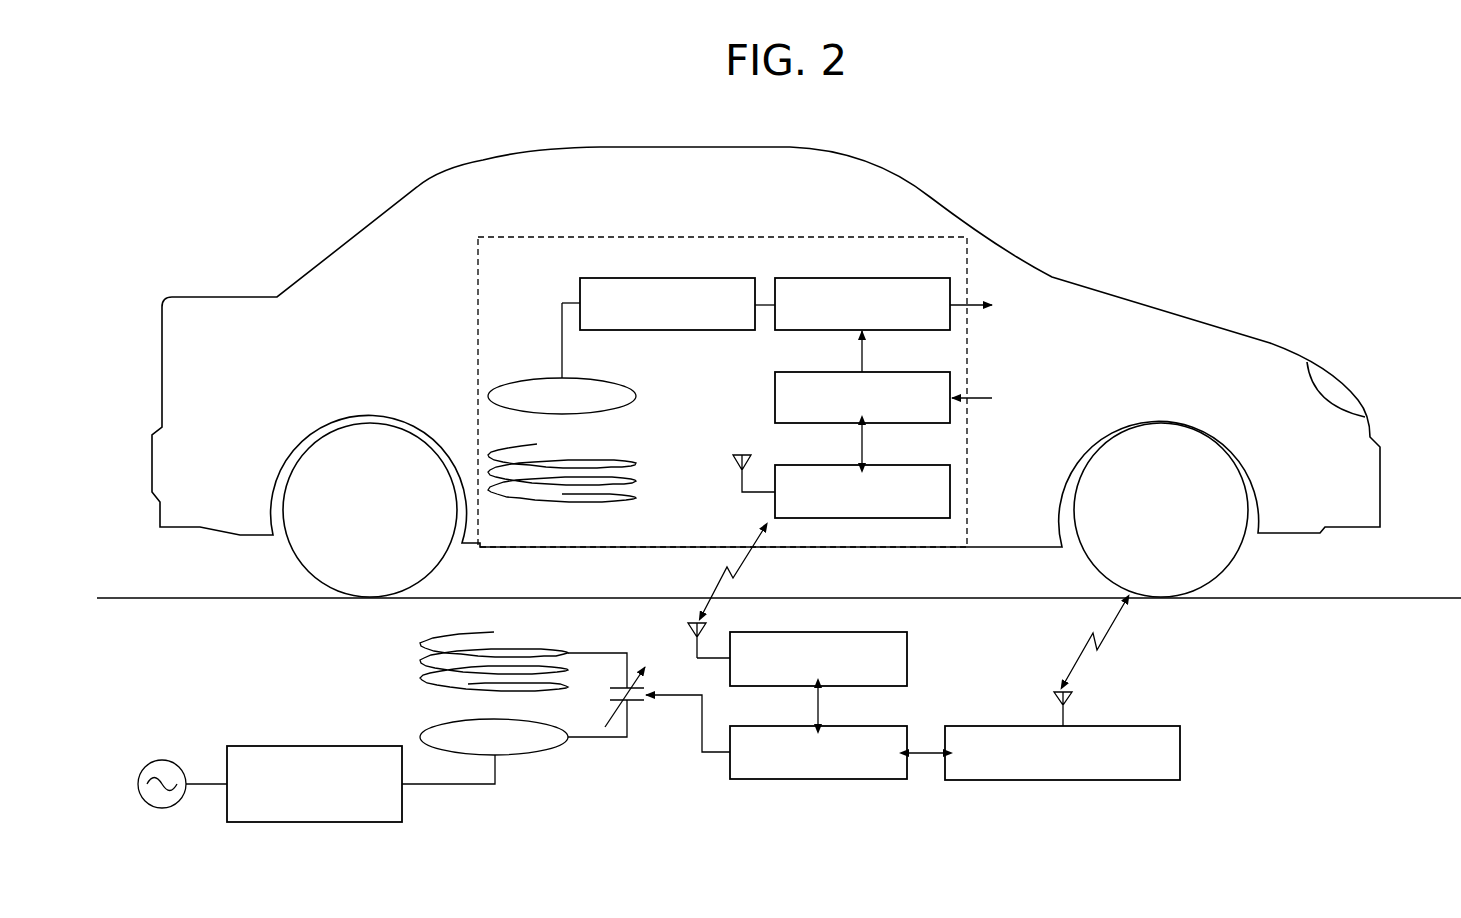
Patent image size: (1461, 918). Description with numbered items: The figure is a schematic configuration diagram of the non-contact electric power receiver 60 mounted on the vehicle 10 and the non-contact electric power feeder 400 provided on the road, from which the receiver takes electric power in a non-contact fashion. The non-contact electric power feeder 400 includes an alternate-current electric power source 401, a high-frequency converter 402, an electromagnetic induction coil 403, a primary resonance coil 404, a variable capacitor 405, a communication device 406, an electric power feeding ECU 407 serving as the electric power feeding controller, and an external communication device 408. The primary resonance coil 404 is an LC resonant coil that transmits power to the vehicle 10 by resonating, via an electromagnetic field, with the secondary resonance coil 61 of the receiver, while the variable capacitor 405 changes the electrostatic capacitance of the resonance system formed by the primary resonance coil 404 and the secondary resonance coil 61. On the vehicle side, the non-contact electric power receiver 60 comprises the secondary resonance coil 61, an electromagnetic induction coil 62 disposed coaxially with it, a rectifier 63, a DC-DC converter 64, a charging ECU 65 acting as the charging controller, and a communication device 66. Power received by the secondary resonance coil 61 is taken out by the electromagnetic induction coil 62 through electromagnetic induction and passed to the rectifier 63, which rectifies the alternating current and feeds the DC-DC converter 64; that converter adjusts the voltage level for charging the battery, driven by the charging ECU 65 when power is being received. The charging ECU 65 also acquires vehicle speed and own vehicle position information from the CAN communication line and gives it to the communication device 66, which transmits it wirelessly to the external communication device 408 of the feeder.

The vehicle 10 is at (1215, 320).
The non-contact electric power receiver 60 is at (722, 237).
The secondary resonance coil 61 is at (640, 452).
The electromagnetic induction coil 62 is at (640, 393).
The rectifier 63 is at (698, 262).
The DC-DC converter 64 is at (910, 262).
The charging ECU 65 is at (901, 372).
The communication device 66 is at (910, 449).
The non-contact electric power feeder 400 is at (1181, 688).
The alternate-current electric power source 401 is at (162, 760).
The high-frequency converter 402 is at (313, 746).
The electromagnetic induction coil 403 is at (523, 757).
The primary resonance coil 404 is at (420, 646).
The variable capacitor 405 is at (640, 703).
The communication device 406 is at (908, 660).
The electric power feeding ECU 407 is at (822, 781).
The external communication device 408 is at (1065, 781).